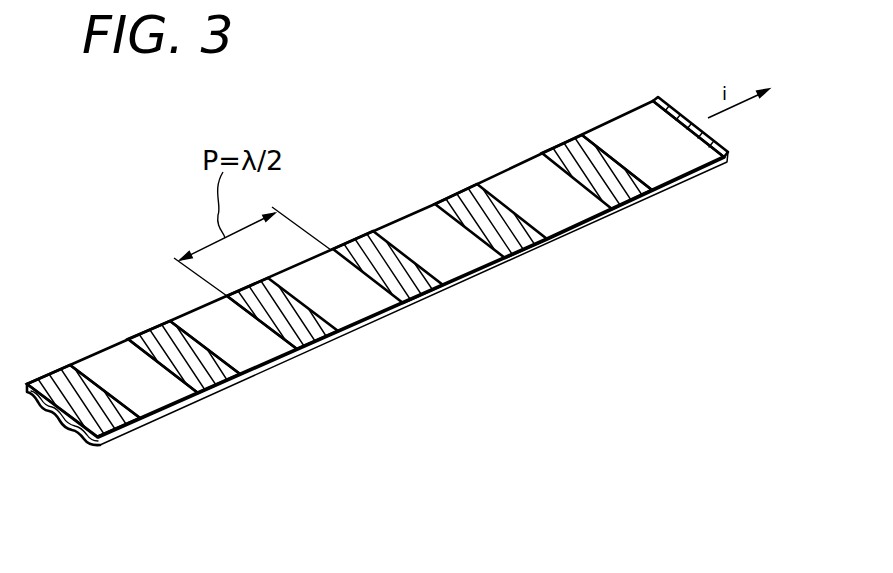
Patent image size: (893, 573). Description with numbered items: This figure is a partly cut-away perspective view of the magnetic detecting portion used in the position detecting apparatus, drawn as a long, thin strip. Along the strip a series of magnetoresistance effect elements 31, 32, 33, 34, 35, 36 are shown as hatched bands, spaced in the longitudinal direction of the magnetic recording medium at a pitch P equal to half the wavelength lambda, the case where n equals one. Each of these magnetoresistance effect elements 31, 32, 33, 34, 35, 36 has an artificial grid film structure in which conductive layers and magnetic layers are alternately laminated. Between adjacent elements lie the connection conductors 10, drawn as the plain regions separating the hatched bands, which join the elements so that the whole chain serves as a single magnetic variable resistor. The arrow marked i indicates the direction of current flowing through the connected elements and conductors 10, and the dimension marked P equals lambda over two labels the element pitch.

The connection conductor 10 is at (100, 368).
The magnetoresistance effect element 31 is at (132, 434).
The magnetoresistance effect element 32 is at (220, 371).
The magnetoresistance effect element 33 is at (330, 328).
The magnetoresistance effect element 34 is at (425, 281).
The magnetoresistance effect element 35 is at (525, 238).
The magnetoresistance effect element 36 is at (632, 188).